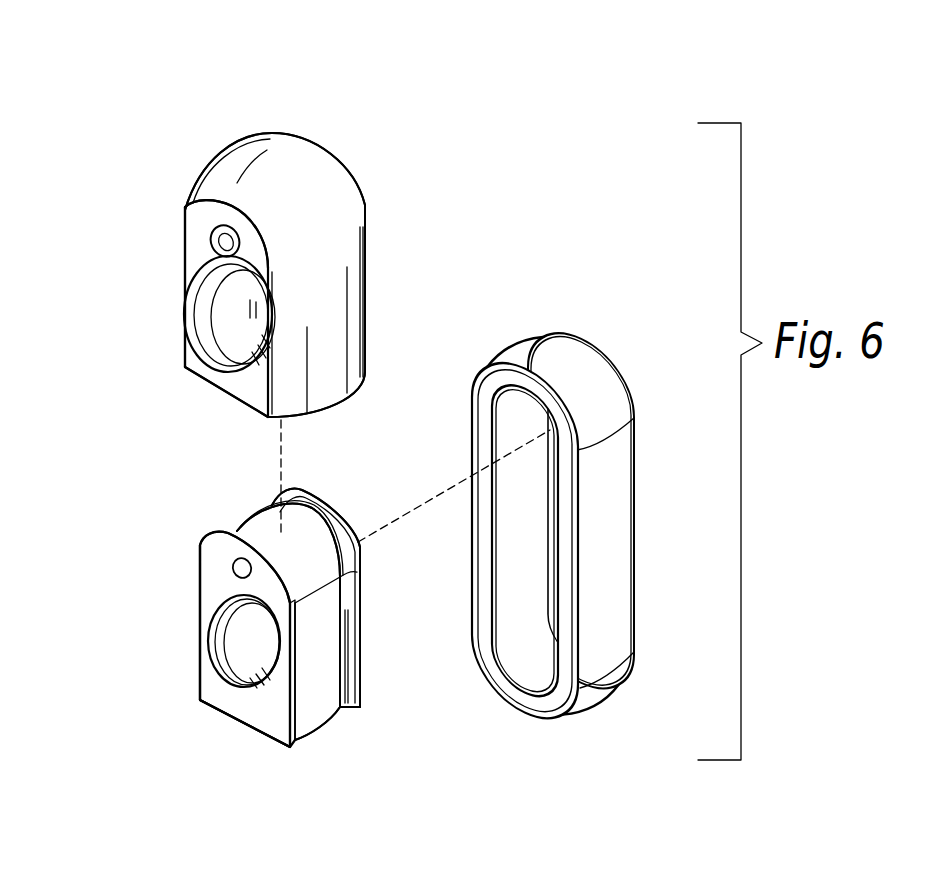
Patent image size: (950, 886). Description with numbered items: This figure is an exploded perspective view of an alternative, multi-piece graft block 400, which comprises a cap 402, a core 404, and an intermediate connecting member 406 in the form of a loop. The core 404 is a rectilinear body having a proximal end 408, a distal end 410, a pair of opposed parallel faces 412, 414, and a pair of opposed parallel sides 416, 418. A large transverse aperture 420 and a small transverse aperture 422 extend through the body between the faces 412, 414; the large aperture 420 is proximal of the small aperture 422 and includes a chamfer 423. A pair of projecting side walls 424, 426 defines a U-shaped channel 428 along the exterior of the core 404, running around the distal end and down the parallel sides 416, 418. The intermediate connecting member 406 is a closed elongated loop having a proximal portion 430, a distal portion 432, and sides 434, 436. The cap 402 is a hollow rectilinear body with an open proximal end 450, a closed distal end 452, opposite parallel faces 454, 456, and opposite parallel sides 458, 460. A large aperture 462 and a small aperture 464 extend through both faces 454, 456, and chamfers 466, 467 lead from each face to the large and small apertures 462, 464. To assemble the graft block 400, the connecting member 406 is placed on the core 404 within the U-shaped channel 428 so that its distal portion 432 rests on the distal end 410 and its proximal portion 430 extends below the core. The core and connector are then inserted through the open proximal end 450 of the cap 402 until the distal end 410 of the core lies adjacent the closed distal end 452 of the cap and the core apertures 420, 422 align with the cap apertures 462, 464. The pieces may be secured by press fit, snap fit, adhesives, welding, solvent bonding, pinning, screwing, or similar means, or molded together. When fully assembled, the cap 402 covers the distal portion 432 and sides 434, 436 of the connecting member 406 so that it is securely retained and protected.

The graft block 400 is at (160, 72).
The cap 402 is at (369, 190).
The core 404 is at (117, 684).
The intermediate connecting member 406 is at (567, 535).
The proximal end 408 is at (308, 731).
The distal end 410 is at (313, 553).
The face 412 is at (240, 712).
The face 414 is at (362, 588).
The side 416 is at (317, 627).
The side 418 is at (200, 612).
The large transverse aperture 420 is at (233, 633).
The small transverse aperture 422 is at (233, 570).
The chamfer 423 is at (222, 657).
The projecting side wall 424 is at (353, 608).
The projecting side wall 426 is at (282, 717).
The U-shaped channel 428 is at (318, 686).
The proximal portion 430 is at (534, 682).
The distal portion 432 is at (537, 400).
The side 434 is at (615, 515).
The side 436 is at (472, 507).
The open proximal end 450 is at (358, 390).
The closed distal end 452 is at (310, 157).
The face 454 is at (250, 393).
The face 456 is at (368, 322).
The side 458 is at (327, 292).
The side 460 is at (183, 243).
The large transverse aperture 462 is at (222, 312).
The small transverse aperture 464 is at (214, 240).
The chamfer 466 is at (212, 343).
The chamfer 467 is at (183, 243).